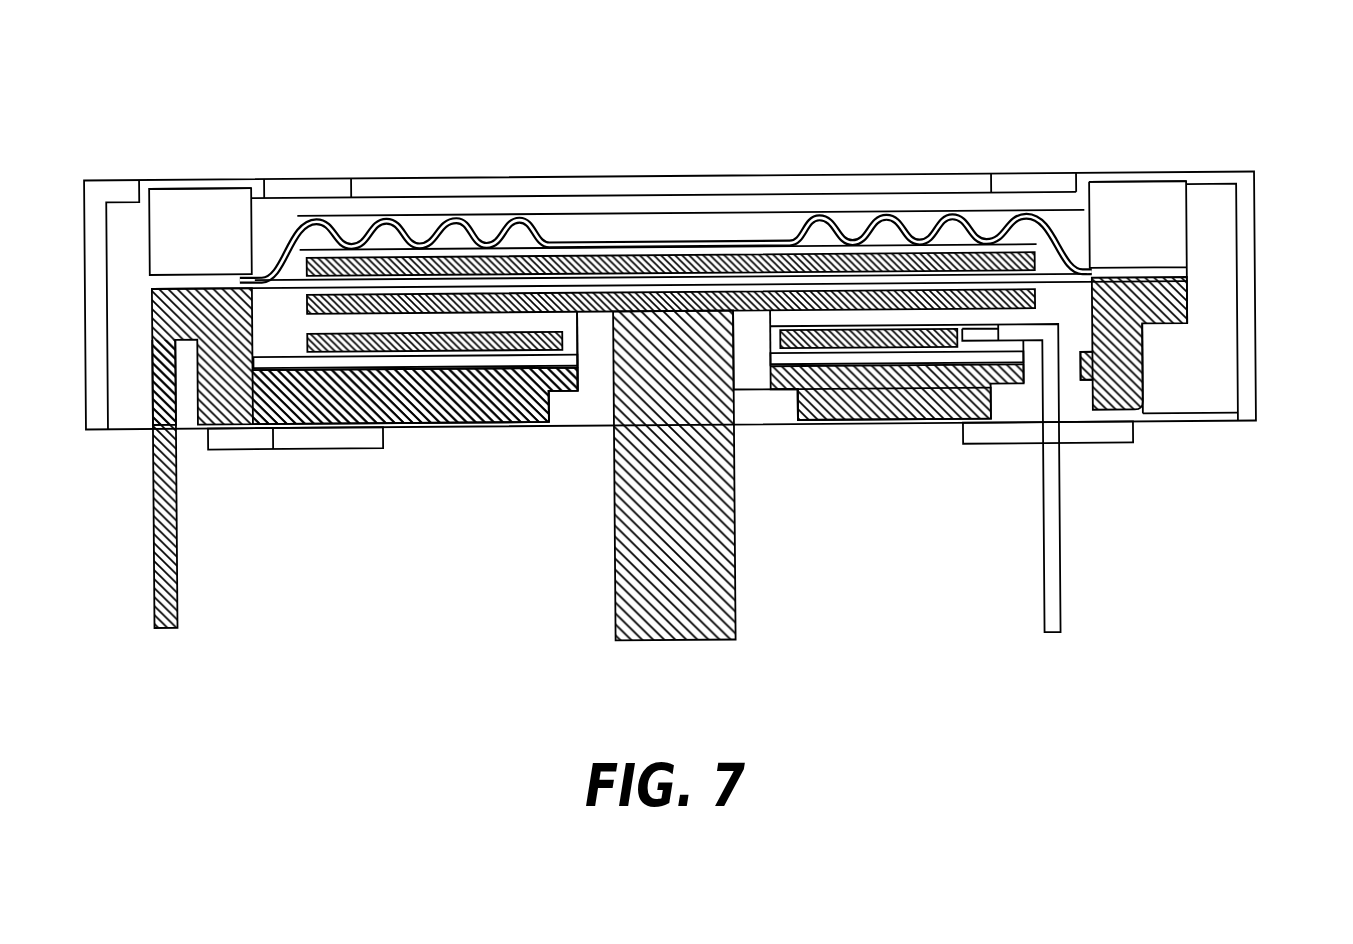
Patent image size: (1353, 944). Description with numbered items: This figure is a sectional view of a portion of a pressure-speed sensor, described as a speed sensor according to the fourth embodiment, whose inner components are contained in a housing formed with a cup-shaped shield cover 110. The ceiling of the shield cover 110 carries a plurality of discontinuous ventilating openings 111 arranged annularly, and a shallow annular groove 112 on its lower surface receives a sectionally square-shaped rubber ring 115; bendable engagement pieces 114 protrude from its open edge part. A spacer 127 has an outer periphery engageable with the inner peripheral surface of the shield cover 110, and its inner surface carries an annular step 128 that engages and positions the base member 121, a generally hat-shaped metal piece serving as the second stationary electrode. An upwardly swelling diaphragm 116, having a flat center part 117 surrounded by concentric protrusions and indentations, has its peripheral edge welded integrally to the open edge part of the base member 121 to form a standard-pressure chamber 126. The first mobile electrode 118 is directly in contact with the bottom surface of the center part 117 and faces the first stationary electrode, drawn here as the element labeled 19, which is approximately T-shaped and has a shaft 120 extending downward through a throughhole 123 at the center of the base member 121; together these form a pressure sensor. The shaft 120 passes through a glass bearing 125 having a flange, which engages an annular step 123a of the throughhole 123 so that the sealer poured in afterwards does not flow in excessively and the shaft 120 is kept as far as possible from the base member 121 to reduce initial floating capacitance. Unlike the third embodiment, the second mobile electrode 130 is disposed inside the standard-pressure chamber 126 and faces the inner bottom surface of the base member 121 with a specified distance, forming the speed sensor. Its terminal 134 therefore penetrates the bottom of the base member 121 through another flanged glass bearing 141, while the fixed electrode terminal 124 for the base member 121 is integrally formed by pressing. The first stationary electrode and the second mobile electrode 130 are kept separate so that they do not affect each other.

The shield cover 110 is at (490, 183).
The ventilating openings 111 is at (328, 187).
The annular groove 112 is at (240, 180).
The engagement pieces 114 is at (352, 440).
The rubber ring 115 is at (195, 205).
The diaphragm 116 is at (420, 223).
The center part 117 is at (653, 250).
The first mobile electrode 118 is at (708, 262).
The thin plate 19 is at (876, 297).
The shaft 120 is at (665, 628).
The base member 121 is at (307, 405).
The throughhole 123 is at (810, 380).
The annular step 123a is at (894, 404).
The fixed electrode terminal 124 is at (155, 630).
The bearing 125 is at (753, 407).
The standard-pressure chamber 126 is at (262, 340).
The spacer 127 is at (128, 217).
The annular step 128 is at (1183, 330).
The second mobile electrode 130 is at (432, 342).
The terminal 134 is at (1052, 618).
The bearing 141 is at (1083, 410).